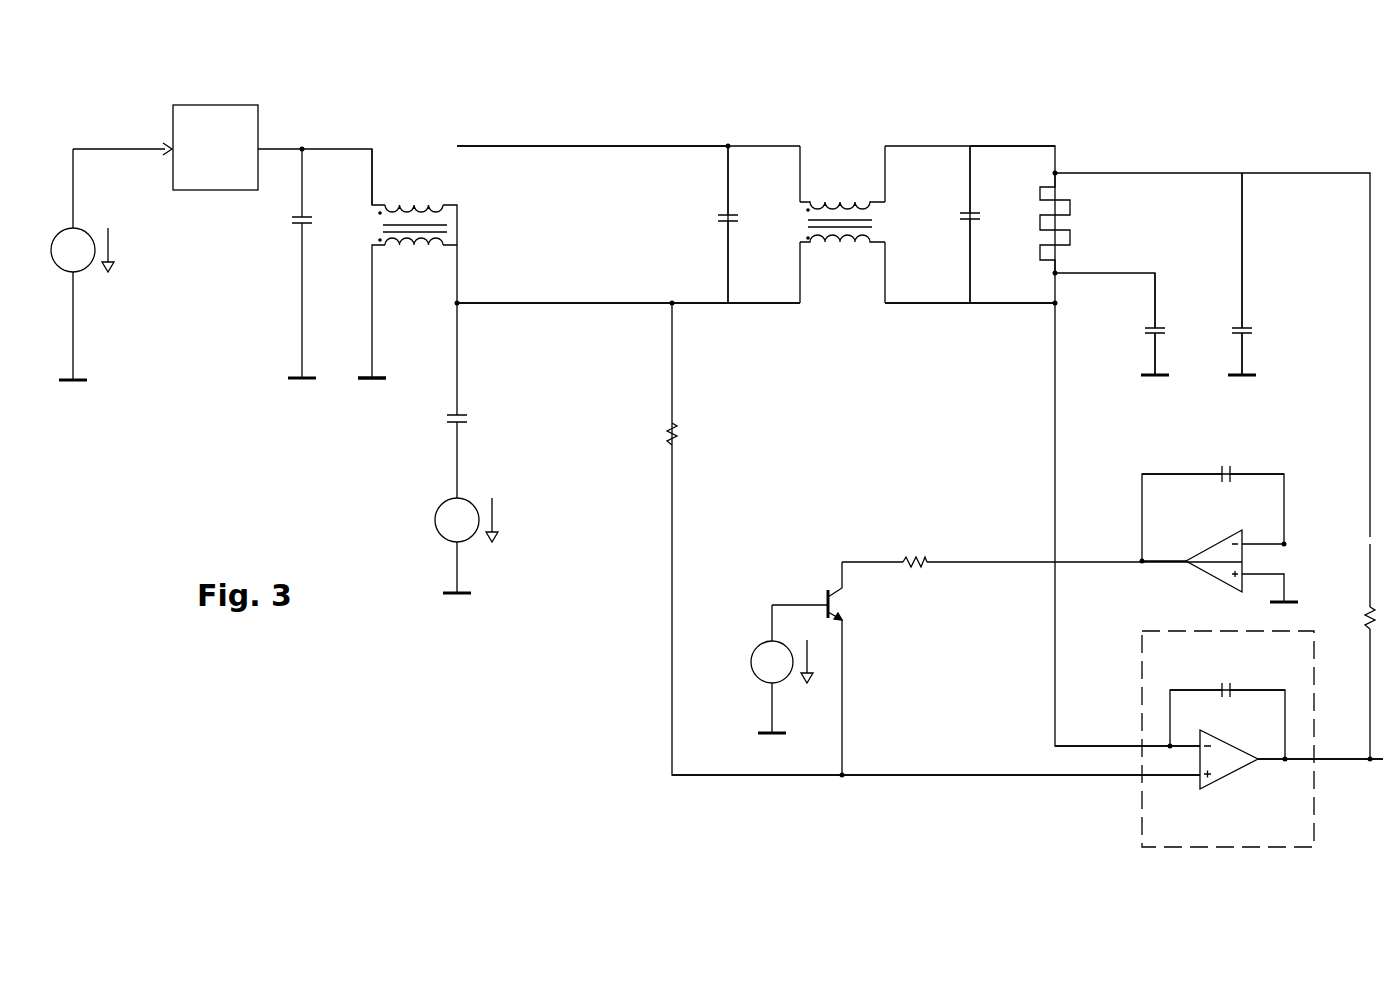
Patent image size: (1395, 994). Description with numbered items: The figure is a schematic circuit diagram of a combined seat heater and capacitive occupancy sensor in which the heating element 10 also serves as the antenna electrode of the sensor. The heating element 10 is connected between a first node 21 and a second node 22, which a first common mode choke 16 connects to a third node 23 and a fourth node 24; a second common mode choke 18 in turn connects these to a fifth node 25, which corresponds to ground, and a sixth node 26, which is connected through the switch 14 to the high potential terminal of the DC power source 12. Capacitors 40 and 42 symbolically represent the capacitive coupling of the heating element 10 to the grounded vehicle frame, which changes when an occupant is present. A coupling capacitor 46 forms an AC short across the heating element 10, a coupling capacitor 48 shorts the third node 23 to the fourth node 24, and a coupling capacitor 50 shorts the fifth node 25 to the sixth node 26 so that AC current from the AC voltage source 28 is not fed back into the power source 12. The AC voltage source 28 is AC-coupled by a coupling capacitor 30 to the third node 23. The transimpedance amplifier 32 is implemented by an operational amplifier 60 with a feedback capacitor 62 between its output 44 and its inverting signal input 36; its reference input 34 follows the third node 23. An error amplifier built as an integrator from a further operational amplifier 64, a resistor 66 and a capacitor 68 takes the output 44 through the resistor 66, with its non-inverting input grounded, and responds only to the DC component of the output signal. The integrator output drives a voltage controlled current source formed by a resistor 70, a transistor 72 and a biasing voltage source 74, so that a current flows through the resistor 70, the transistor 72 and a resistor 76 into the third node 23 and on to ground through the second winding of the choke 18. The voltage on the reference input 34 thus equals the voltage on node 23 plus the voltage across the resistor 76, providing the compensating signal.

The heating element 10 is at (1072, 215).
The power source 12 is at (88, 268).
The switch 14 is at (210, 192).
The first common mode choke 16 is at (838, 246).
The second common mode choke 18 is at (408, 248).
The first node 21 is at (1010, 303).
The second node 22 is at (1005, 148).
The third node 23 is at (697, 303).
The fourth node 24 is at (557, 148).
The fifth node 25 is at (368, 378).
The sixth node 26 is at (368, 205).
The AC voltage source 28 is at (472, 505).
The coupling capacitor 30 is at (465, 418).
The transimpedance amplifier 32 is at (1142, 660).
The reference input 34 is at (1098, 776).
The signal input 36 is at (1115, 742).
The capacitor 40 is at (1150, 322).
The capacitor 42 is at (1240, 325).
The output 44 is at (1340, 762).
The coupling capacitor 46 is at (968, 220).
The coupling capacitor 48 is at (730, 222).
The coupling capacitor 50 is at (298, 222).
The operational amplifier 60 is at (1214, 790).
The feedback capacitor 62 is at (1232, 688).
The operational amplifier 64 is at (1196, 556).
The resistor 66 is at (1365, 612).
The capacitor 68 is at (1233, 470).
The resistor 70 is at (915, 558).
The transistor 72 is at (830, 590).
The biasing voltage source 74 is at (755, 648).
The resistor 76 is at (678, 438).